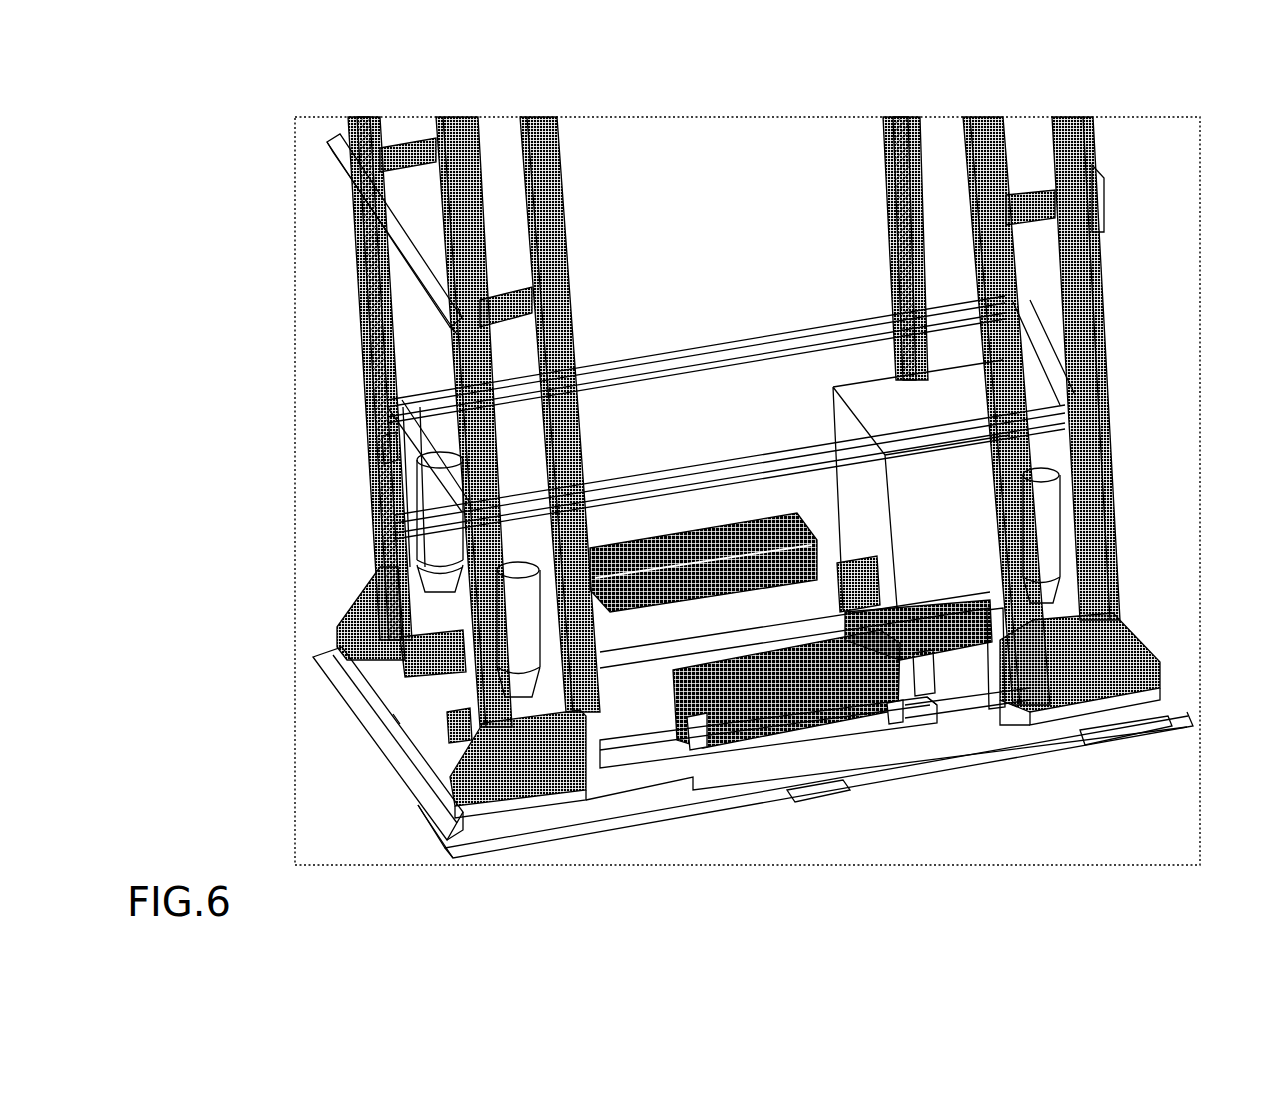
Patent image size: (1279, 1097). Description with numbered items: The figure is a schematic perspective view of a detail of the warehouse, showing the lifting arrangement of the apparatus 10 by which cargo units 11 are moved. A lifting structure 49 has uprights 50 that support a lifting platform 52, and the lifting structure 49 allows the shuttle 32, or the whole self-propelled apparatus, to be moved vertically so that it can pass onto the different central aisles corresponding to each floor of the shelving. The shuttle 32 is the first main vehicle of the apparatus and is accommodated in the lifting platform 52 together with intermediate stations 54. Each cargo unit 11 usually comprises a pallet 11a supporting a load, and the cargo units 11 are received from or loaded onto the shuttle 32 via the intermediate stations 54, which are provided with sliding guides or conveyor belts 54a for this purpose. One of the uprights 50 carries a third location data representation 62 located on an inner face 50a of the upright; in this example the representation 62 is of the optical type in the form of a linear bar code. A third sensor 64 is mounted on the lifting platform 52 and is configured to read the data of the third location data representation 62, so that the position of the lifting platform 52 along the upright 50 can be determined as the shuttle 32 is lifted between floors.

The treatment apparatus 10 is at (360, 350).
The cargo unit 11 is at (858, 370).
The pallet 11a is at (650, 548).
The shuttle 32 is at (757, 712).
The lifting structure 49 is at (1120, 312).
The upright 50 is at (560, 178).
The inner face 50a is at (352, 126).
The lifting platform 52 is at (933, 707).
The intermediate station 54 is at (970, 645).
The sliding guides or conveyor belts 54a is at (840, 545).
The third location data representation 62 is at (375, 266).
The third sensor 64 is at (382, 447).